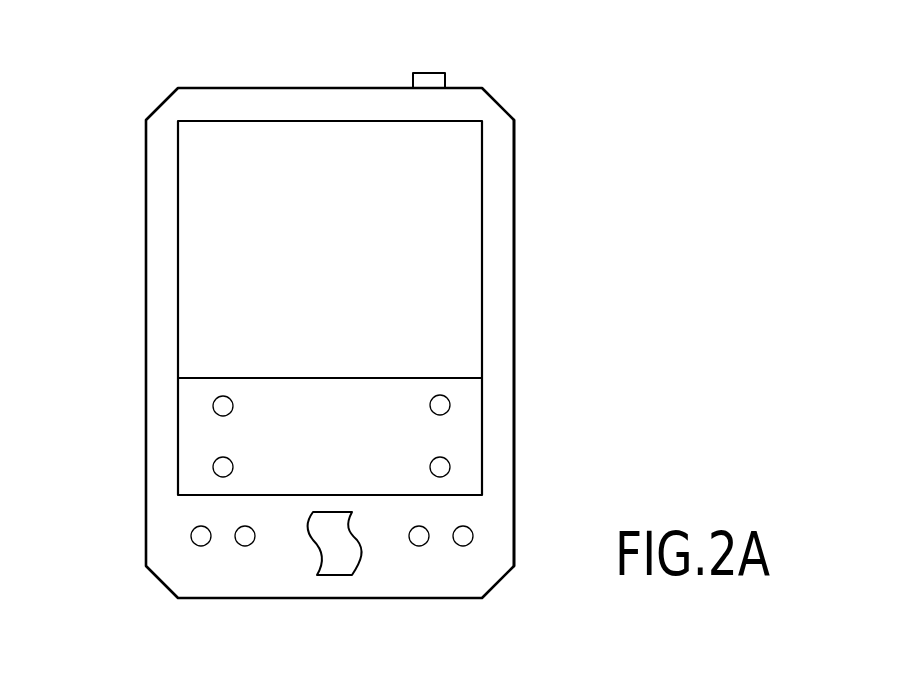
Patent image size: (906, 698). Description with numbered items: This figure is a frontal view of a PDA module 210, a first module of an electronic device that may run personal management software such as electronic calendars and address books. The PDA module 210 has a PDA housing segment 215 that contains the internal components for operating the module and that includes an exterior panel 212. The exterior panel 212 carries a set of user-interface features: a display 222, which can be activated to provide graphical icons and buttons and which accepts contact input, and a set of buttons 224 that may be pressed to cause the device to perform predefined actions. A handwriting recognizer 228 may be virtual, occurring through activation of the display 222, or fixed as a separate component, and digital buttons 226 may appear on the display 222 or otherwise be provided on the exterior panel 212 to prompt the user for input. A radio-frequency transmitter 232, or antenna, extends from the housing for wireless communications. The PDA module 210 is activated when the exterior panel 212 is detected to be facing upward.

The PDA module 210 is at (155, 44).
The exterior panel 212 is at (167, 192).
The PDA housing segment 215 is at (524, 212).
The display 222 is at (347, 266).
The buttons 224 is at (245, 547).
The digital buttons 226 is at (211, 404).
The handwriting recognizer 228 is at (347, 454).
The radio-frequency transmitter 232 is at (433, 73).